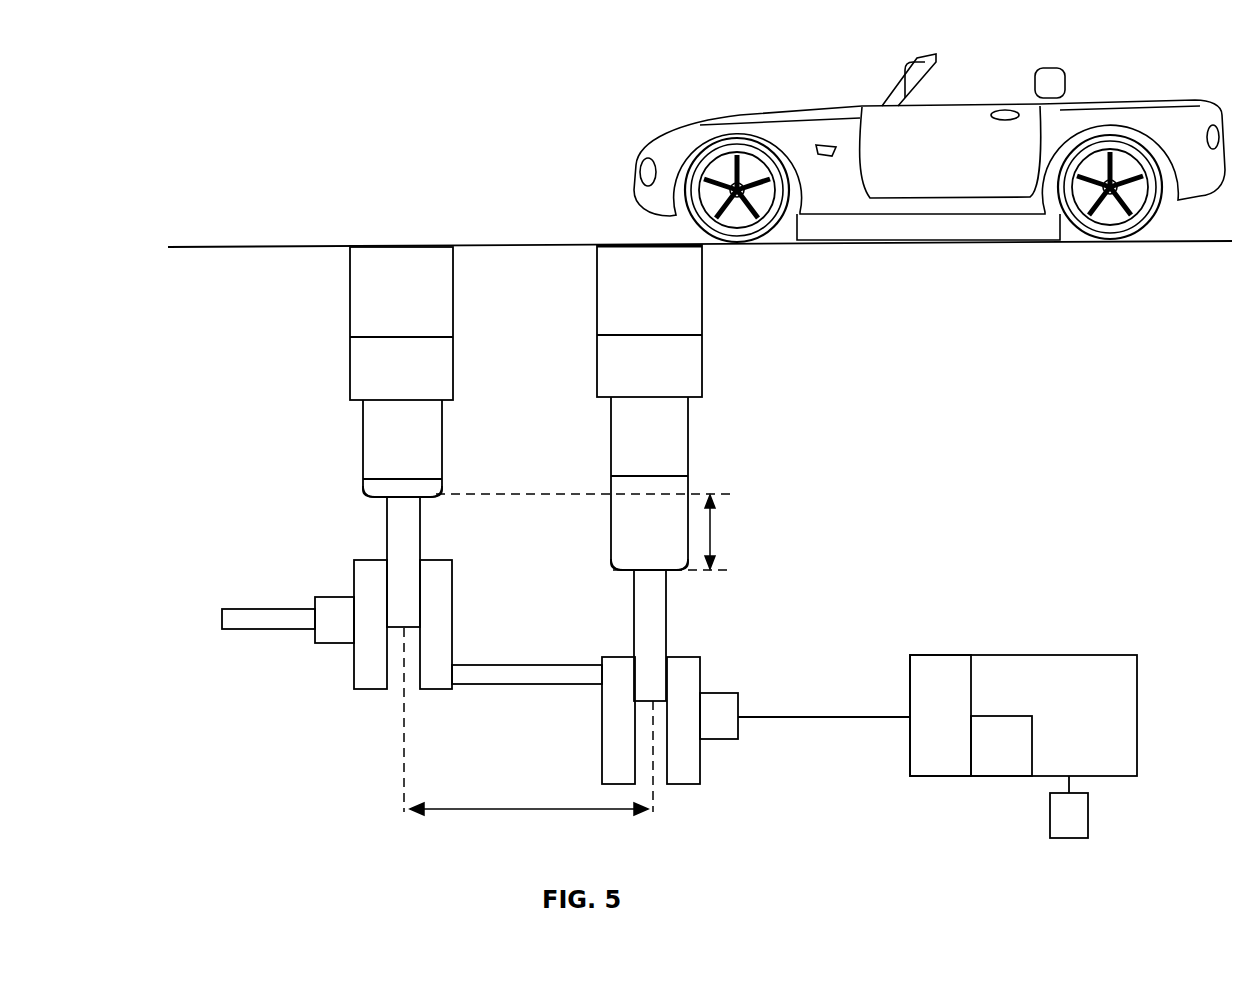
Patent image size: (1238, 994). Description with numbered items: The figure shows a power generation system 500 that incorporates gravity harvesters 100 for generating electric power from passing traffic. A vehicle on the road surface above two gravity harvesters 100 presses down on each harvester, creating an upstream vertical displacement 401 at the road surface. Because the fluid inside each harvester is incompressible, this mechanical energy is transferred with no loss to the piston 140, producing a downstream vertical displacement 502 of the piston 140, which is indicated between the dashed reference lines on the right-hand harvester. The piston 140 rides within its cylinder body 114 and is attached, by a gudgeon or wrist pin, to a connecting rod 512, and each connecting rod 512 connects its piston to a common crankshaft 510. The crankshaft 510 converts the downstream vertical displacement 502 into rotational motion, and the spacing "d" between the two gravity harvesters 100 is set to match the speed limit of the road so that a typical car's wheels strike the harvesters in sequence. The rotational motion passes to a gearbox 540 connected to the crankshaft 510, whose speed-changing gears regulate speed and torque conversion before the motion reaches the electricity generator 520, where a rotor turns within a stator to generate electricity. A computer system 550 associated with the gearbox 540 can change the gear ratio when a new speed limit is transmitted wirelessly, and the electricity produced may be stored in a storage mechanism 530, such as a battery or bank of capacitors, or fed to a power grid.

The power generation system 500 is at (134, 260).
The upstream vertical displacement 401 is at (702, 248).
The gravity harvester 100 is at (287, 327).
The piston 114 is at (362, 430).
The piston 140 is at (362, 487).
The connecting rod 512 is at (385, 526).
The downstream vertical displacement 502 is at (584, 532).
The crankshaft 510 is at (474, 720).
The electricity generator 520 is at (1023, 715).
The storage mechanism 530 is at (1070, 807).
The gearbox 540 is at (940, 715).
The computer system 550 is at (1001, 746).